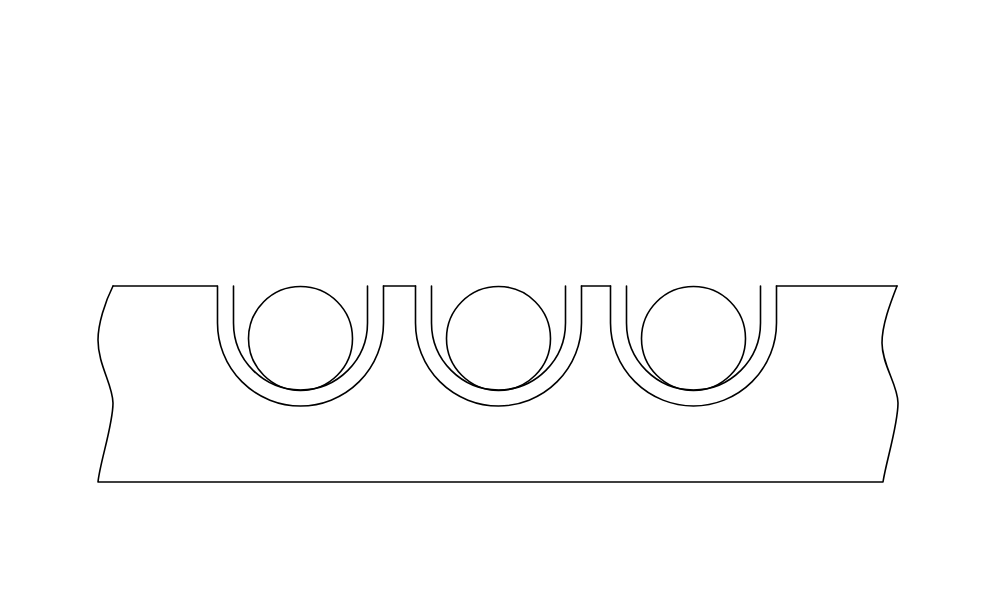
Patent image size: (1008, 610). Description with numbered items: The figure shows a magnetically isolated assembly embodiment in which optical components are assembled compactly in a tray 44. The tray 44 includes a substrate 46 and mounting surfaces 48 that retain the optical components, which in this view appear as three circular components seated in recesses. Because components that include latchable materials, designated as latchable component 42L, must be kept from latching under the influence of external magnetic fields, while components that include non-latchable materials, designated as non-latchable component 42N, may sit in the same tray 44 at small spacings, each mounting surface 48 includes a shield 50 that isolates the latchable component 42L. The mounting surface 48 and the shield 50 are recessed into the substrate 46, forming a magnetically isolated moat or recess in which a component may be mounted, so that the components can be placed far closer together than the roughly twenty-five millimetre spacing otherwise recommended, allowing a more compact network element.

The latchable optical component 42L is at (296, 286).
The non-latchable optical component 42N is at (505, 287).
The tray 44 is at (752, 128).
The substrate 46 is at (189, 441).
The mounting surface 48 is at (323, 403).
The shield 50 is at (372, 286).